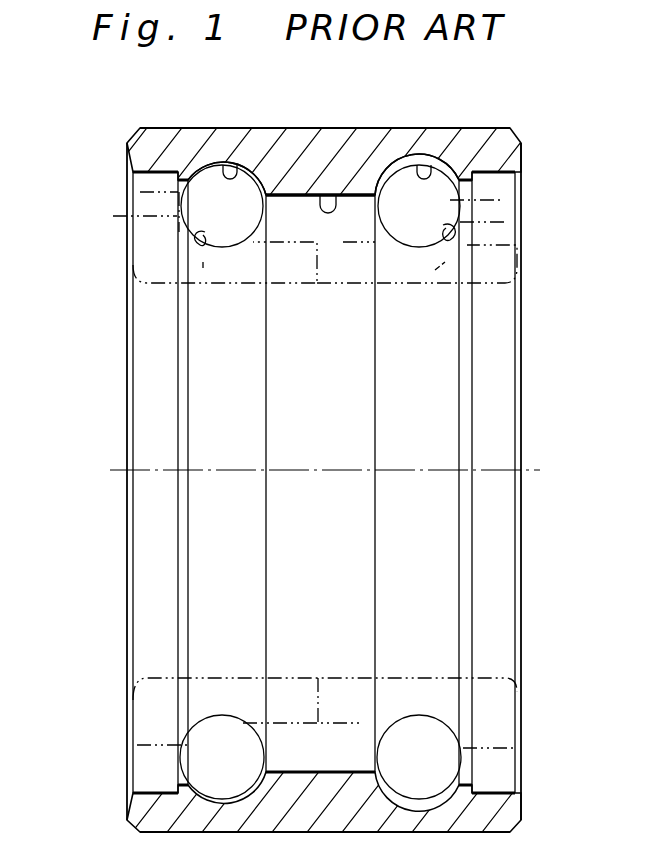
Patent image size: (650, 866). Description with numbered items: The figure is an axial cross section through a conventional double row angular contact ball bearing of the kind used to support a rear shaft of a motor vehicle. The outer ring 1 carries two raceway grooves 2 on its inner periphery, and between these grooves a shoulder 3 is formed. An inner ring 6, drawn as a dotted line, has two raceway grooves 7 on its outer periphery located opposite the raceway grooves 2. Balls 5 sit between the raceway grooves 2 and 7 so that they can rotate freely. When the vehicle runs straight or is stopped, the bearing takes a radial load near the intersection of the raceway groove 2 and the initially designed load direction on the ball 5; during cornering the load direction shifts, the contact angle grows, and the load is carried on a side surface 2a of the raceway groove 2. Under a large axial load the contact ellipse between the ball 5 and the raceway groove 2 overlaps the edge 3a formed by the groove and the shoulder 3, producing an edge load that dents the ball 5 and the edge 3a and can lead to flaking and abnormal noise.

The outer ring 1 is at (118, 140).
The raceway groove 2 is at (229, 163).
The side surface 2a is at (185, 192).
The shoulder 3 is at (328, 195).
The edge 3a is at (263, 190).
The ball 5 is at (200, 204).
The inner ring 6 is at (203, 268).
The raceway groove 7 is at (200, 250).